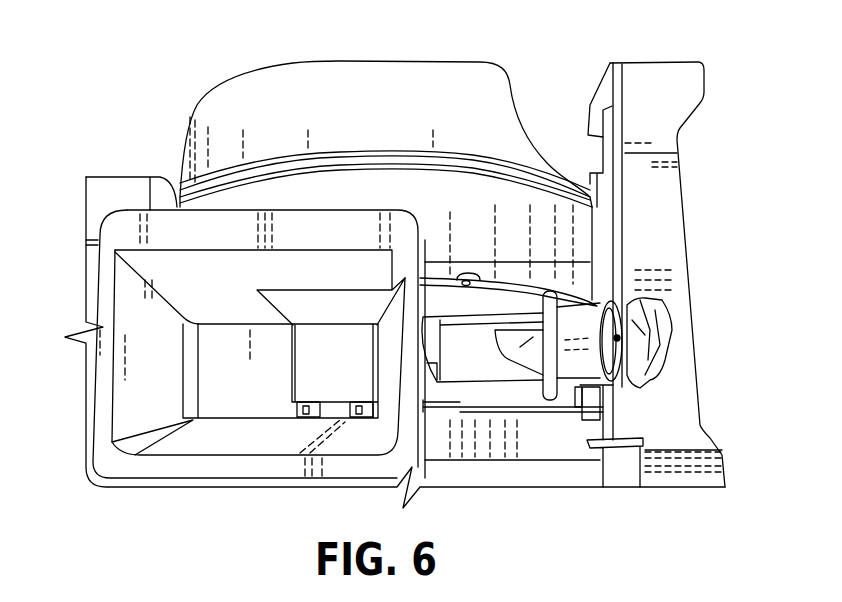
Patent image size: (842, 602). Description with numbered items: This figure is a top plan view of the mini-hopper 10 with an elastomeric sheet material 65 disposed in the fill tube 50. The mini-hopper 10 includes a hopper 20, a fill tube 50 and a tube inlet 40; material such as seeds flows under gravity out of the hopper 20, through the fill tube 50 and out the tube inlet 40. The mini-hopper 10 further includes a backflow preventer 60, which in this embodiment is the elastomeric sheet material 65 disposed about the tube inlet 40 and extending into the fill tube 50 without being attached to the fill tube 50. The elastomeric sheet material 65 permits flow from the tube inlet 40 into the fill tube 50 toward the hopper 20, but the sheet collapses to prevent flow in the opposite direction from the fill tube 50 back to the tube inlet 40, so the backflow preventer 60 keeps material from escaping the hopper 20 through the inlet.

The mini-hopper 10 is at (640, 47).
The hopper 20 is at (262, 443).
The tube inlet 40 is at (636, 386).
The fill tube 50 is at (502, 372).
The backflow preventer 60 is at (695, 351).
The elastomeric sheet material 65 is at (668, 327).